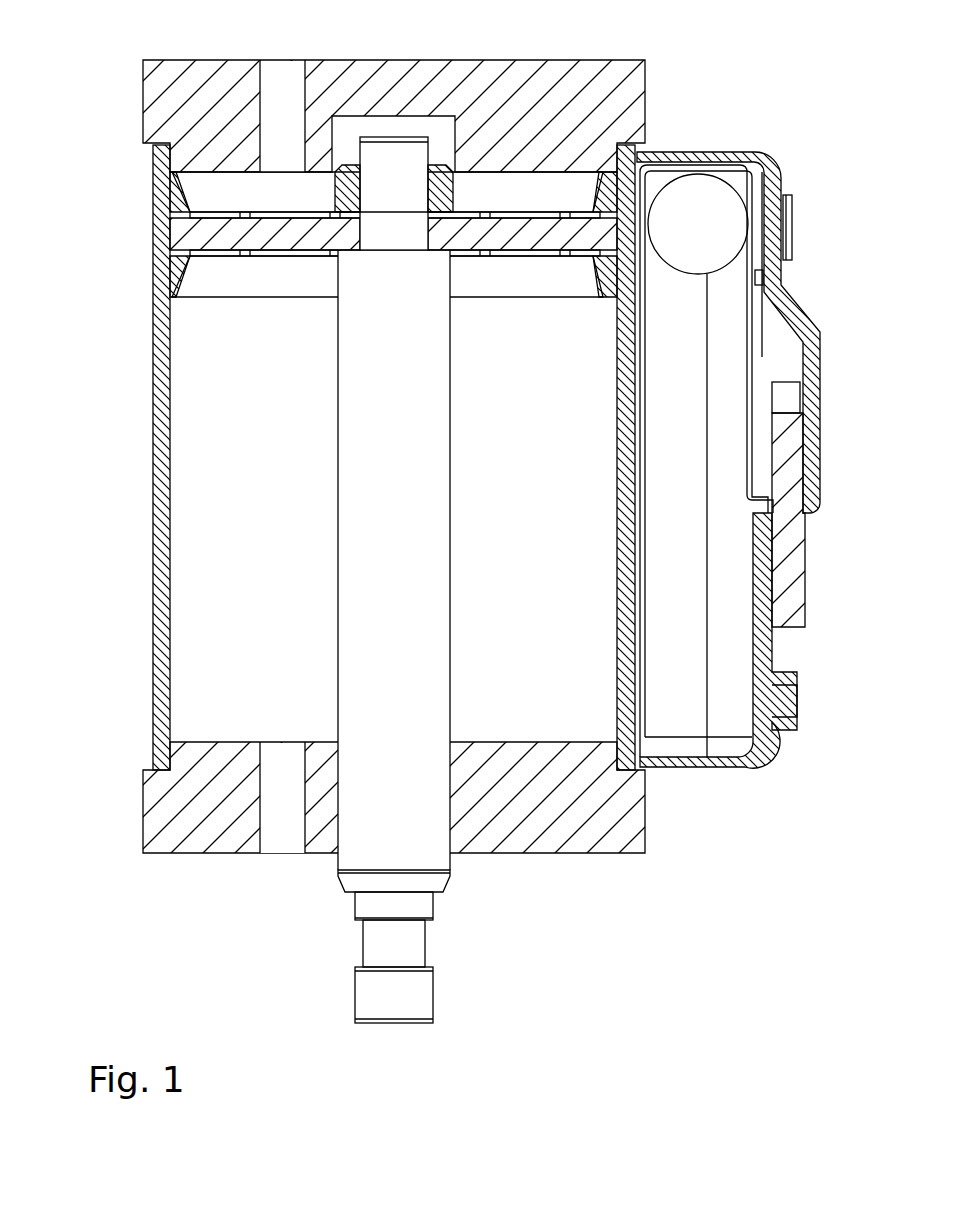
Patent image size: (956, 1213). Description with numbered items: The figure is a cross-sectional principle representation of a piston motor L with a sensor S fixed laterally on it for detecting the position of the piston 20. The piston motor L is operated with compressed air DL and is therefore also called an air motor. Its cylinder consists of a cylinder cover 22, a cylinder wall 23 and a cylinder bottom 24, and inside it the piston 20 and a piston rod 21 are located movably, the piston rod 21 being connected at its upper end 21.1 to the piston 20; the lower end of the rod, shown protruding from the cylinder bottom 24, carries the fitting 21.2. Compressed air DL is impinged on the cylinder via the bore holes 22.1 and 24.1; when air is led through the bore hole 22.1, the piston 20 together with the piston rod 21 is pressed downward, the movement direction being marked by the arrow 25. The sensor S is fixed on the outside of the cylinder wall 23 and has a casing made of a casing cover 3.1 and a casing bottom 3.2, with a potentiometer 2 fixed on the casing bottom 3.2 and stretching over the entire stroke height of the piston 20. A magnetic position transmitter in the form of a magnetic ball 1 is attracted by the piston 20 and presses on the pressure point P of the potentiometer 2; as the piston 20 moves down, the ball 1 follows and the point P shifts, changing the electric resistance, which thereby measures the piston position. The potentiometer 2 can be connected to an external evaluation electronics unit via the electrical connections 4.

The magnetic position transmitter 1 is at (698, 179).
The potentiometer 2 is at (706, 497).
The casing cover 3.1 is at (741, 487).
The casing bottom 3.2 is at (671, 495).
The electrical connections 4 is at (817, 520).
The piston 20 is at (353, 284).
The piston rod 21 is at (431, 608).
The upper end of the piston rod 21.1 is at (408, 230).
The rod end fitting 21.2 is at (439, 1011).
The cylinder cover 22 is at (361, 108).
The bore hole 22.1 is at (248, 86).
The cylinder wall 23 is at (131, 457).
The cylinder bottom 24 is at (362, 795).
The bore hole 24.1 is at (251, 829).
The arrow 25 is at (698, 257).
The compressed air DL is at (283, 108).
The piston motor L is at (82, 217).
The pressure point P is at (668, 288).
The sensor S is at (798, 103).